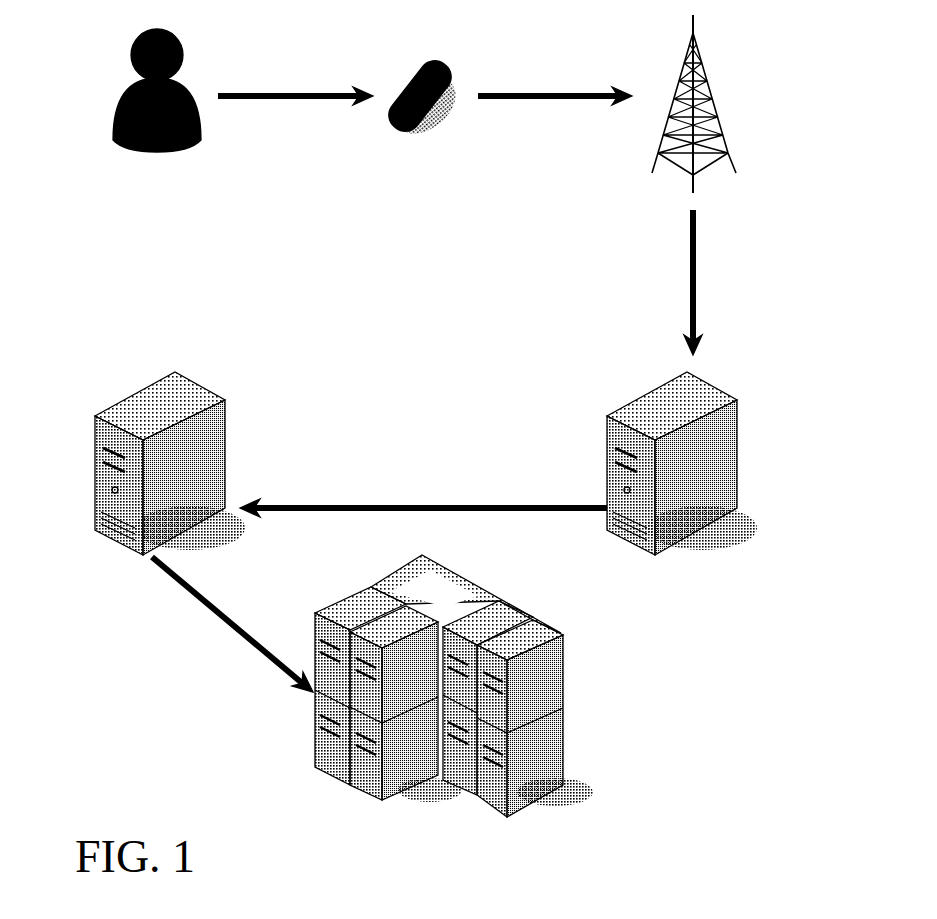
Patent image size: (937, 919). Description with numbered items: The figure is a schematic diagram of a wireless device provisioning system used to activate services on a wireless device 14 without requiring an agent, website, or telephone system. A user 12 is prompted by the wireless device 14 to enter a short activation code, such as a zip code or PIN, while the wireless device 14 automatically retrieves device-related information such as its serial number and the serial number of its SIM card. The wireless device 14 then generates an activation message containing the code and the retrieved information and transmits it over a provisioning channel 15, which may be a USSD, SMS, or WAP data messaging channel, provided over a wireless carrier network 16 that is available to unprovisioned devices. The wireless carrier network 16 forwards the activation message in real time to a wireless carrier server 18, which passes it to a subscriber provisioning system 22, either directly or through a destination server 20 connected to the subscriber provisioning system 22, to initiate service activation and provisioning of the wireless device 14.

The user 12 is at (117, 82).
The wireless device 14 is at (412, 60).
The provisioning channel 15 is at (540, 93).
The wireless carrier network 16 is at (705, 70).
The wireless carrier server 18 is at (740, 448).
The destination server 20 is at (100, 412).
The subscriber provisioning system 22 is at (572, 725).